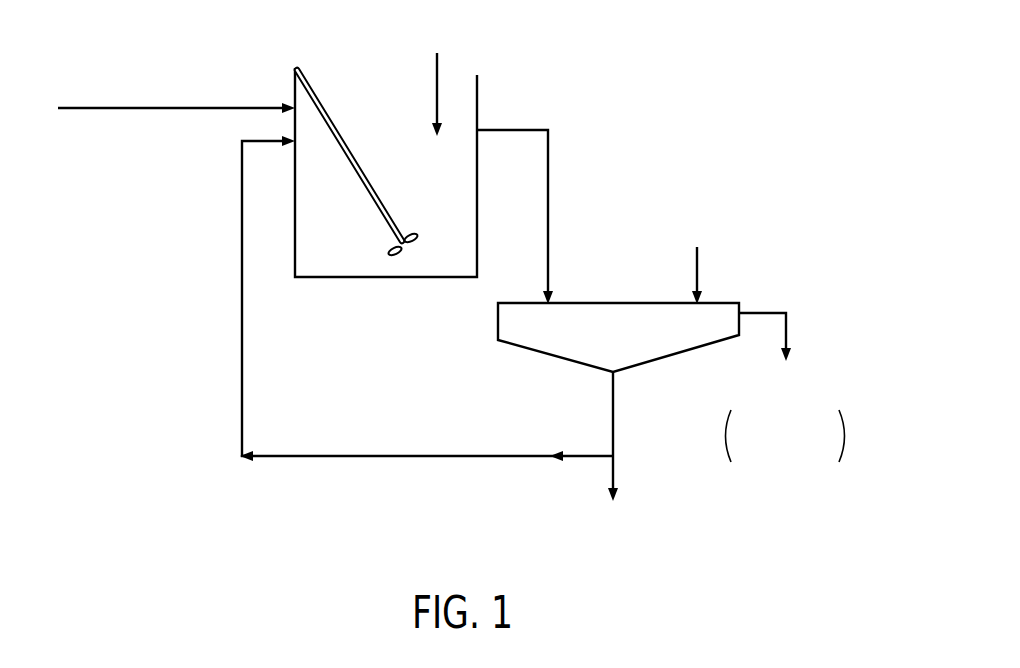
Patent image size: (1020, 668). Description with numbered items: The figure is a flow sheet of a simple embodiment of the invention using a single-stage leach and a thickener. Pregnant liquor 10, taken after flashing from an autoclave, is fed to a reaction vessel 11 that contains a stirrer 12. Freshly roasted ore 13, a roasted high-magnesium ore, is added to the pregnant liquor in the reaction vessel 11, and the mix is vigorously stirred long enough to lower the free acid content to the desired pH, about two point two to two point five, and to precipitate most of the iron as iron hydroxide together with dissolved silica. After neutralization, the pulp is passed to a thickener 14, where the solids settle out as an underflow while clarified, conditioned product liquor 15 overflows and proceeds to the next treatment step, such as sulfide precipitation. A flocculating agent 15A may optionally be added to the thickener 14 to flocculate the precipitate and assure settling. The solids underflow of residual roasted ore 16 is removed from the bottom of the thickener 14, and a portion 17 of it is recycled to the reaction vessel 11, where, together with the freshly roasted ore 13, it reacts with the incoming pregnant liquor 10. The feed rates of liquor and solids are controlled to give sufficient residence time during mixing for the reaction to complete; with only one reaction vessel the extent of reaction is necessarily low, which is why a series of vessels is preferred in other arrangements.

The pregnant liquor 10 is at (176, 95).
The reaction vessel 11 is at (413, 278).
The stirrer 12 is at (358, 157).
The freshly roasted ore 13 is at (496, 68).
The thickener 14 is at (510, 344).
The product liquor 15 is at (760, 313).
The flocculating agent 15A is at (686, 262).
The residual roasted ore 16 is at (614, 420).
The recycled portion 17 is at (406, 456).